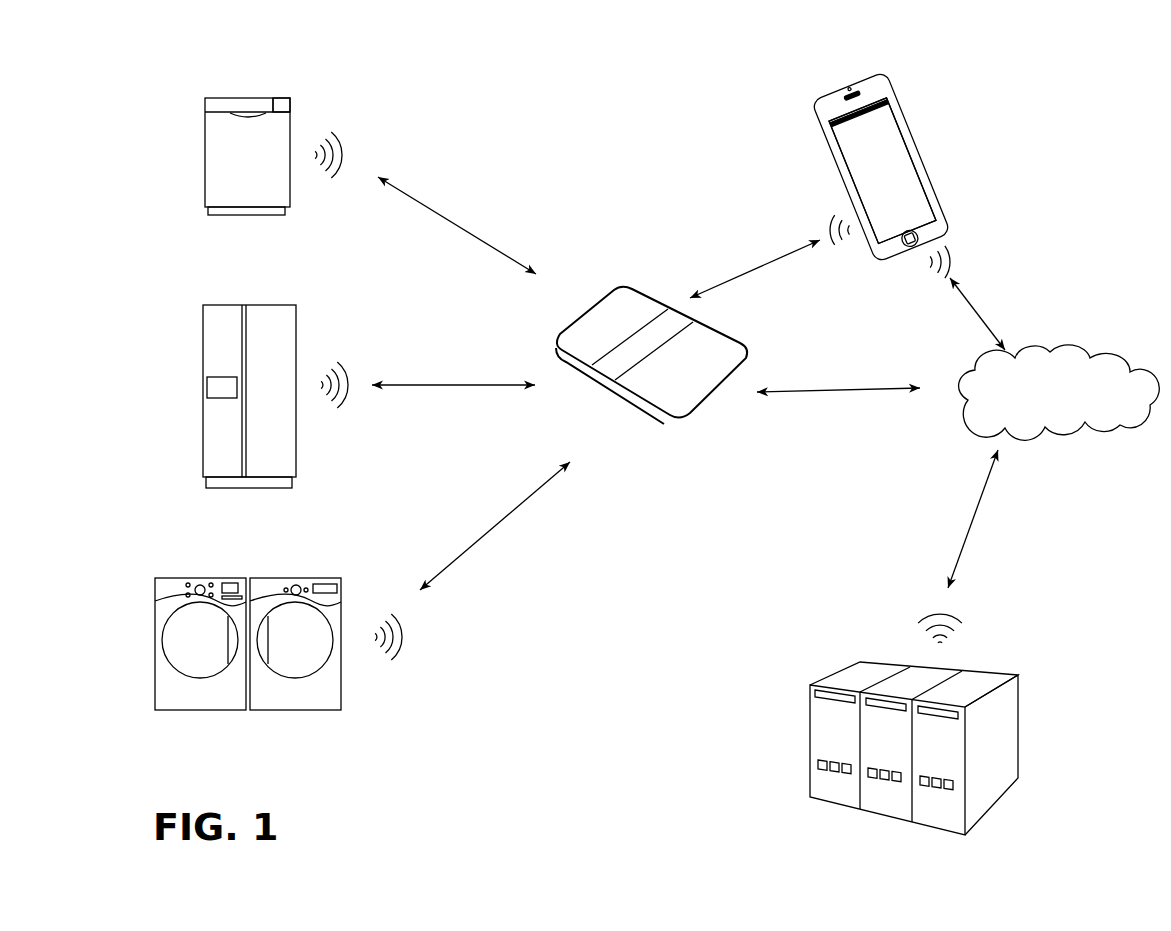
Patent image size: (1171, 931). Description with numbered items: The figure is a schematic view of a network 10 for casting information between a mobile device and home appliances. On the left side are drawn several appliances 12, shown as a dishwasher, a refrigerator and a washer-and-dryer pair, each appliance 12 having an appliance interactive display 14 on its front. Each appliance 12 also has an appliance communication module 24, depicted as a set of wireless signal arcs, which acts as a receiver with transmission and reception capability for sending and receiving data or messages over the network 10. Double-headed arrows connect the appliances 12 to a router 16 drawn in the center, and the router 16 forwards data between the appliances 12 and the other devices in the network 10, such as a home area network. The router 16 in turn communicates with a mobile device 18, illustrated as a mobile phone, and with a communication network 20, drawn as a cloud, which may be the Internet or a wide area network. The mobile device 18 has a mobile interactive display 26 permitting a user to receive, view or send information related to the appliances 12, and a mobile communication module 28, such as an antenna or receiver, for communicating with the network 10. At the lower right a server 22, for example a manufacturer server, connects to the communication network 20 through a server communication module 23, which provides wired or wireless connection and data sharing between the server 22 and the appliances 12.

The network 10 is at (590, 112).
The appliance 12 is at (205, 188).
The appliance interactive display 14 is at (287, 103).
The router 16 is at (640, 412).
The mobile device 18 is at (913, 140).
The communication network 20 is at (1062, 400).
The server 22 is at (1018, 731).
The server communication module 23 is at (907, 628).
The appliance communication module 24 is at (362, 152).
The mobile interactive display 26 is at (880, 181).
The mobile communication module 28 is at (830, 252).